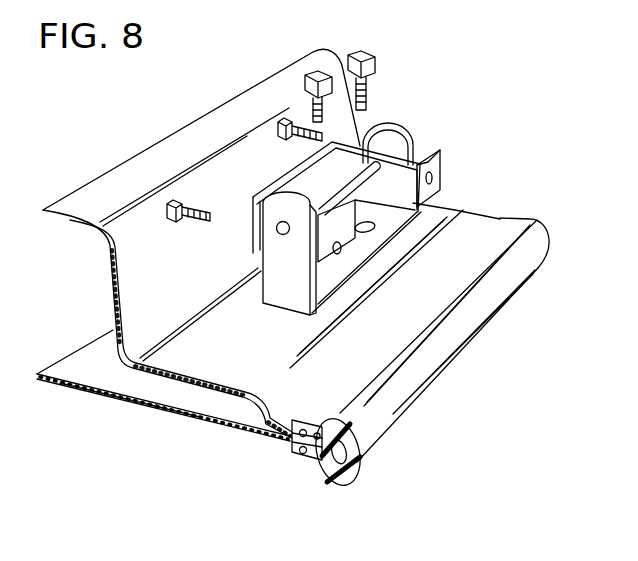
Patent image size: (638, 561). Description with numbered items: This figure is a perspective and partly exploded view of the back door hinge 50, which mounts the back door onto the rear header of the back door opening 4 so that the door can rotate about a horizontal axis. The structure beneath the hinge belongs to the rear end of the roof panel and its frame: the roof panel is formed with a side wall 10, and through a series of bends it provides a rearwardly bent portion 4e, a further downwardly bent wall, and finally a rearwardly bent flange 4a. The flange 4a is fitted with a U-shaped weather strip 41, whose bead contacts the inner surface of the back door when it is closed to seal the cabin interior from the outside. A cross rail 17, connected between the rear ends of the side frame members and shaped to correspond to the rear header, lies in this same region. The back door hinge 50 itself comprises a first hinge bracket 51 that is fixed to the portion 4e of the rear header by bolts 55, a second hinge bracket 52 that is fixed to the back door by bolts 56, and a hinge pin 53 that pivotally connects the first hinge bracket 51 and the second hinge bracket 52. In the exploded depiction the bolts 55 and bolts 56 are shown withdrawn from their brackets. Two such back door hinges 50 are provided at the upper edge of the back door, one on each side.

The back door opening 4 is at (304, 357).
The flange 4a is at (283, 434).
The portion 4e is at (197, 372).
The side wall 10 is at (86, 197).
The cross rail 17 is at (112, 400).
The U-shaped weather strip 41 is at (395, 412).
The back door hinge 50 is at (413, 117).
The first hinge bracket 51 is at (283, 297).
The second hinge bracket 52 is at (430, 190).
The hinge pin 53 is at (330, 197).
The bolts 55 is at (312, 78).
The bolts 56 is at (277, 115).